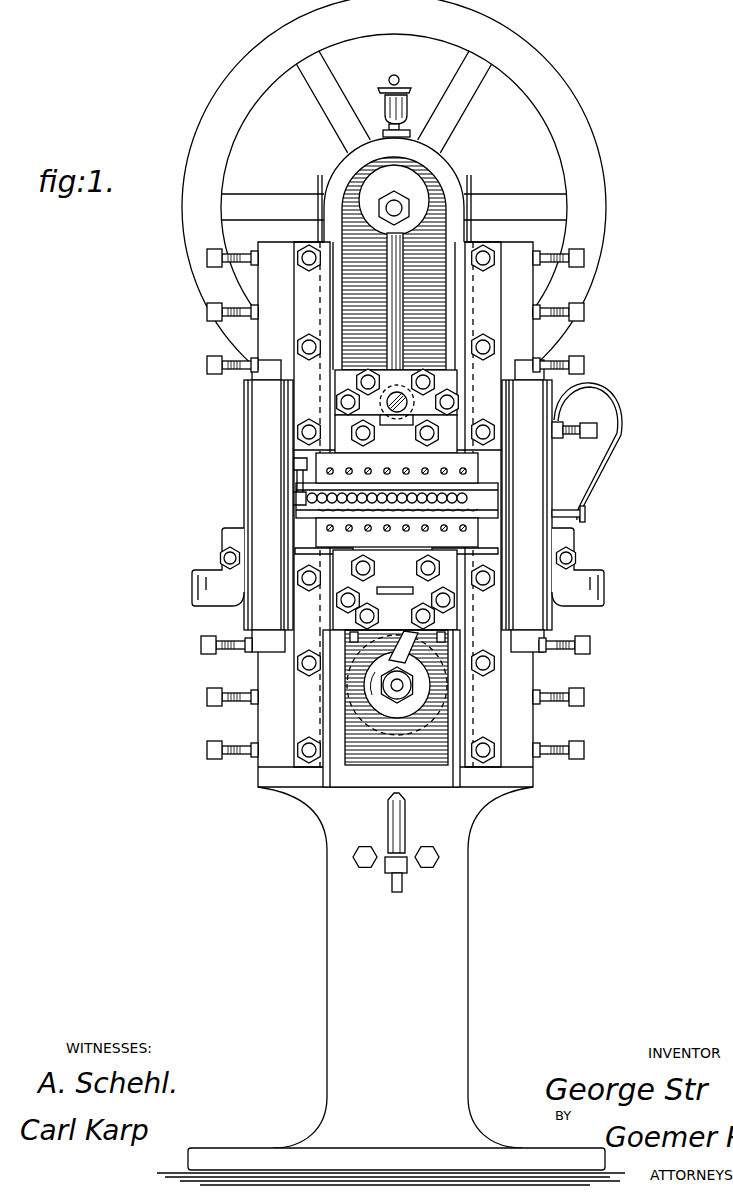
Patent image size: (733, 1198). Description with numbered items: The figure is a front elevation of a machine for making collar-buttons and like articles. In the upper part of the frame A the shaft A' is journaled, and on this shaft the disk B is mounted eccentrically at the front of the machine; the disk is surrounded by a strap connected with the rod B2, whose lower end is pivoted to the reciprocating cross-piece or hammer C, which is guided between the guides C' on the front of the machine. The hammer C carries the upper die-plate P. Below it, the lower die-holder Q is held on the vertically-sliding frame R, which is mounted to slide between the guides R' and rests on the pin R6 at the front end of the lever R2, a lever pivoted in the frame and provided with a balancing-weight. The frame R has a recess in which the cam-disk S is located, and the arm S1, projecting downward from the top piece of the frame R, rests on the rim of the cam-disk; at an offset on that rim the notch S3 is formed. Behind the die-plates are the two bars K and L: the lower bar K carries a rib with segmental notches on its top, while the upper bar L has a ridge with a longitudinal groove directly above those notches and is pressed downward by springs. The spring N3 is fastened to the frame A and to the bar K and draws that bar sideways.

The frame A is at (391, 661).
The shaft A' is at (409, 225).
The disk B is at (394, 201).
The rod B2 is at (394, 263).
The reciprocating cross-piece or hammer C is at (396, 411).
The guides C' is at (397, 436).
The upper die-plate P is at (397, 468).
The upper bar L is at (397, 492).
The lower die-holder Q is at (397, 532).
The spring N3 is at (587, 452).
The lower bar K is at (568, 508).
The cam-disk S is at (397, 686).
The arm S1 is at (403, 647).
The notch S3 is at (400, 683).
The vertically-sliding frame R is at (391, 709).
The guides R' is at (397, 698).
The pin R6 is at (406, 818).
The lever R2 is at (385, 871).